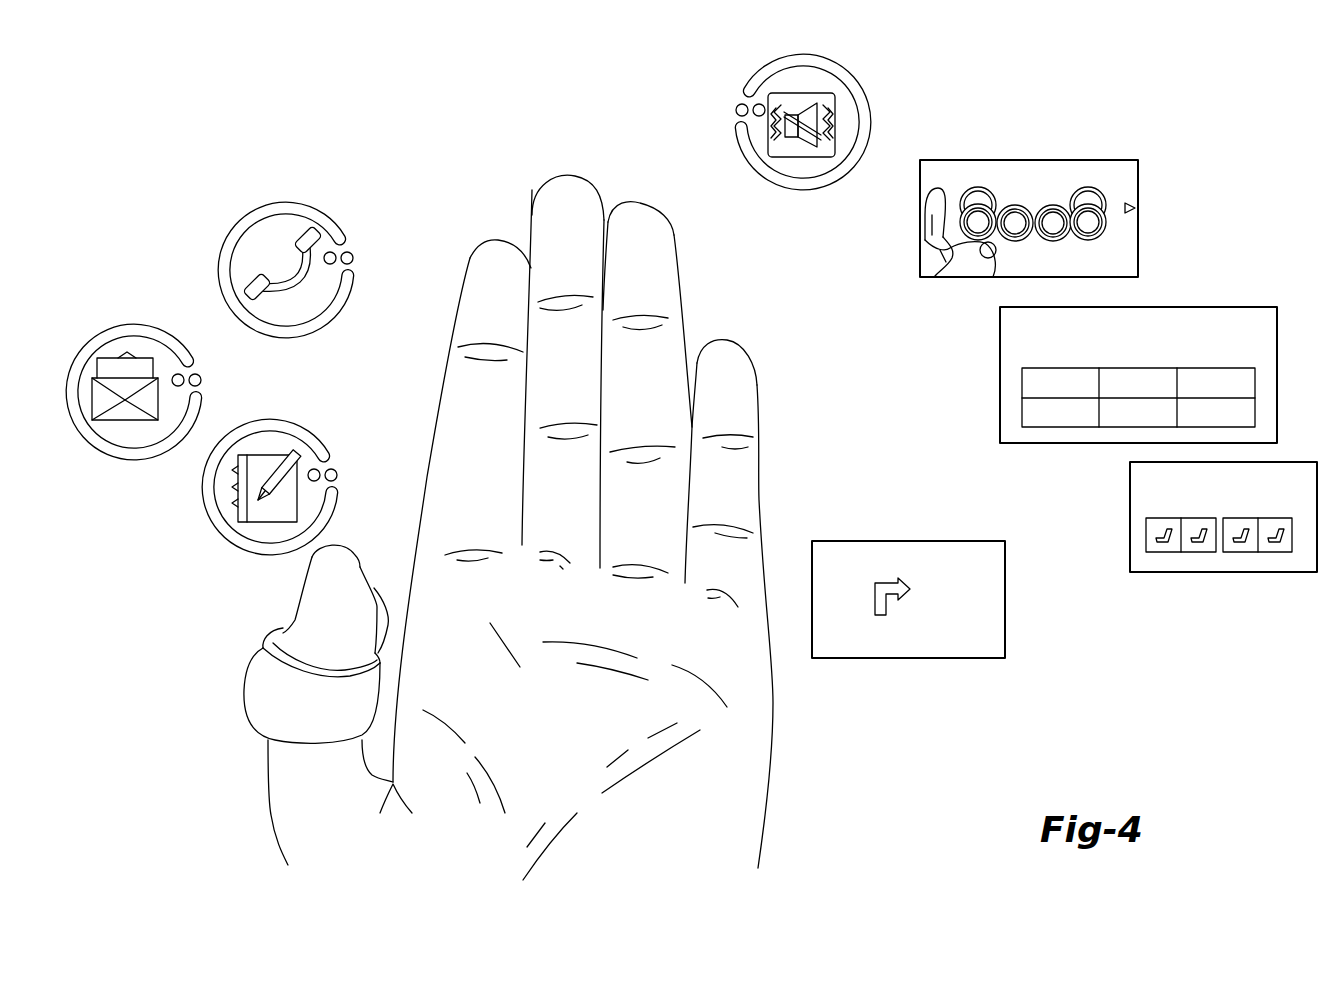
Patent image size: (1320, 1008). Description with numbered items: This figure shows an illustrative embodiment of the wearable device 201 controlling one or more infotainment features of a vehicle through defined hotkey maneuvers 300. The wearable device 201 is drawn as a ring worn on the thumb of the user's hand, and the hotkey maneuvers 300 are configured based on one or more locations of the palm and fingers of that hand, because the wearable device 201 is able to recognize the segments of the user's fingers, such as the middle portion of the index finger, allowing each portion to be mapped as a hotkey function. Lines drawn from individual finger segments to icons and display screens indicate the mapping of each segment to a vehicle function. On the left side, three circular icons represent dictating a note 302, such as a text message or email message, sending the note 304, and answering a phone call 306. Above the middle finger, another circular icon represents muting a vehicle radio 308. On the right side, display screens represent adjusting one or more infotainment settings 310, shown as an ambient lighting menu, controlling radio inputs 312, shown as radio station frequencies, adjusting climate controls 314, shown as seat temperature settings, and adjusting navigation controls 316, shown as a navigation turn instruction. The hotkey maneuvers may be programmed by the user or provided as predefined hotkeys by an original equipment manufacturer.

The hotkey maneuvers 300 is at (224, 90).
The wearable device 201 is at (258, 692).
The dictating a note 302 is at (475, 475).
The sending the note 304 is at (482, 380).
The answering a phone call 306 is at (498, 258).
The muting a vehicle radio 308 is at (569, 213).
The adjusting one or more infotainment settings 310 is at (920, 218).
The controlling radio inputs 312 is at (1000, 375).
The adjusting climate controls 314 is at (643, 518).
The navigation display 316 is at (907, 541).